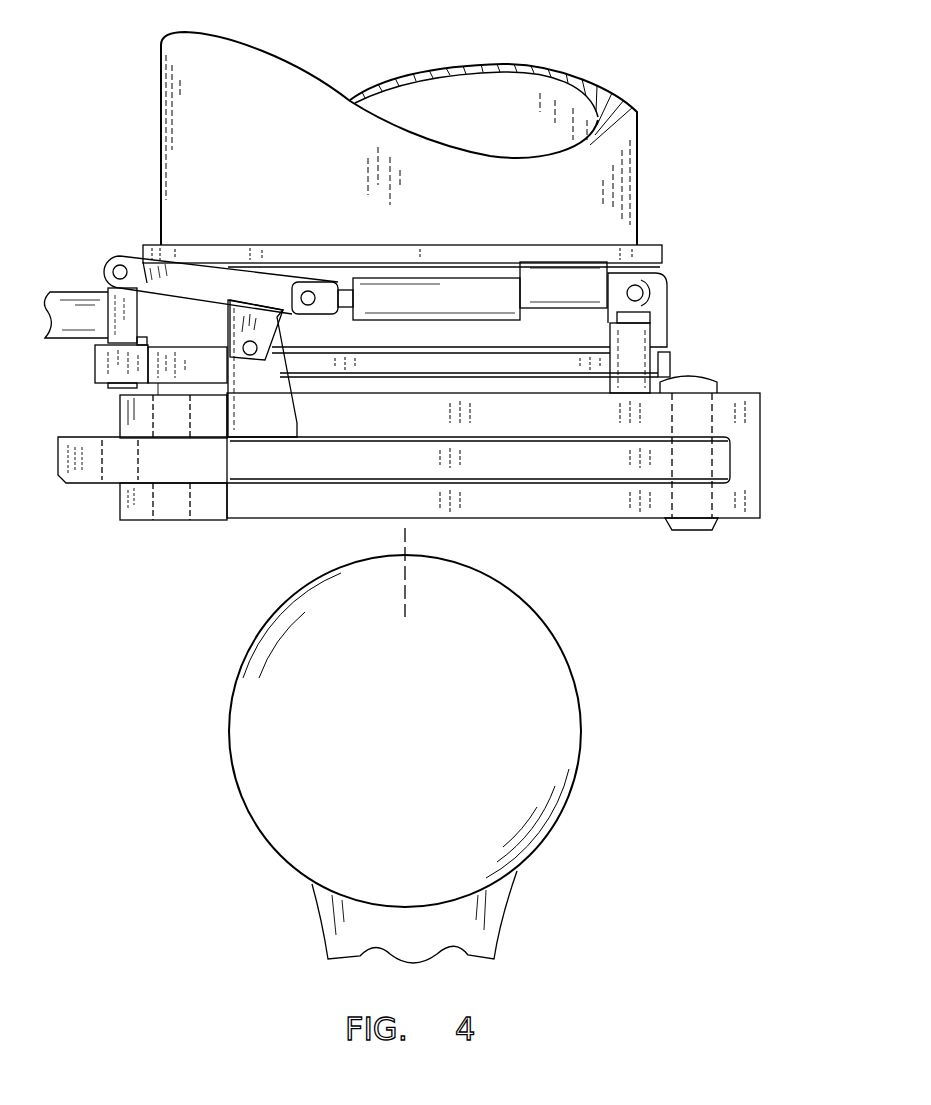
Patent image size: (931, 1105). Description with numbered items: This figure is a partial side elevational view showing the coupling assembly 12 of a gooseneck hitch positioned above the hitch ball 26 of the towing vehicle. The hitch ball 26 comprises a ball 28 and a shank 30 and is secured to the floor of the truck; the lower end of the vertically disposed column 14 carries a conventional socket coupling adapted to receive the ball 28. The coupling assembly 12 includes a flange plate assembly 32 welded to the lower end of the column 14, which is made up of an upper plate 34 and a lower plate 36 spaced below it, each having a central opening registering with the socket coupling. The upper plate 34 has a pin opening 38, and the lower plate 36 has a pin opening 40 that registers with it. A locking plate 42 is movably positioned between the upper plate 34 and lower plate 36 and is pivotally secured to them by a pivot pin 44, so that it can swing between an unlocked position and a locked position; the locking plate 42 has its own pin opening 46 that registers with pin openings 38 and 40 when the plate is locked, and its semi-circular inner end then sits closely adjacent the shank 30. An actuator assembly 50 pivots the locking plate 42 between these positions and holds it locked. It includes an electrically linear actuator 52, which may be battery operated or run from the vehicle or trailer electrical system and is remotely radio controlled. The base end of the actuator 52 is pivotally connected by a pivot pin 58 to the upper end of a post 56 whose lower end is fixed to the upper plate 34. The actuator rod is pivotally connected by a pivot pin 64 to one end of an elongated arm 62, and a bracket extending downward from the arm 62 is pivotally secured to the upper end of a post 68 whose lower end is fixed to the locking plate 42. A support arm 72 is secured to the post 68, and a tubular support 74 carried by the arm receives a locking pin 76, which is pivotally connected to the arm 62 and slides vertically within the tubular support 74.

The coupling assembly 12 is at (692, 350).
The column 14 is at (605, 165).
The hitch ball 26 is at (593, 788).
The ball 28 is at (545, 690).
The shank 30 is at (460, 912).
The flange plate assembly 32 is at (718, 365).
The upper plate 34 is at (655, 418).
The lower plate 36 is at (582, 512).
The pin opening 38 is at (117, 413).
The pin opening 40 is at (172, 508).
The locking plate 42 is at (63, 447).
The pivot pin 44 is at (690, 523).
The pin opening 46 is at (113, 470).
The actuator assembly 50 is at (613, 253).
The electrically linear actuator 52 is at (480, 293).
The post 56 is at (655, 320).
The pivot pin 58 is at (638, 287).
The elongated arm 62 is at (227, 285).
The pivot pin 64 is at (262, 330).
The post 68 is at (268, 432).
The support arm 72 is at (173, 360).
The tubular support 74 is at (95, 365).
The locking pin 76 is at (97, 313).